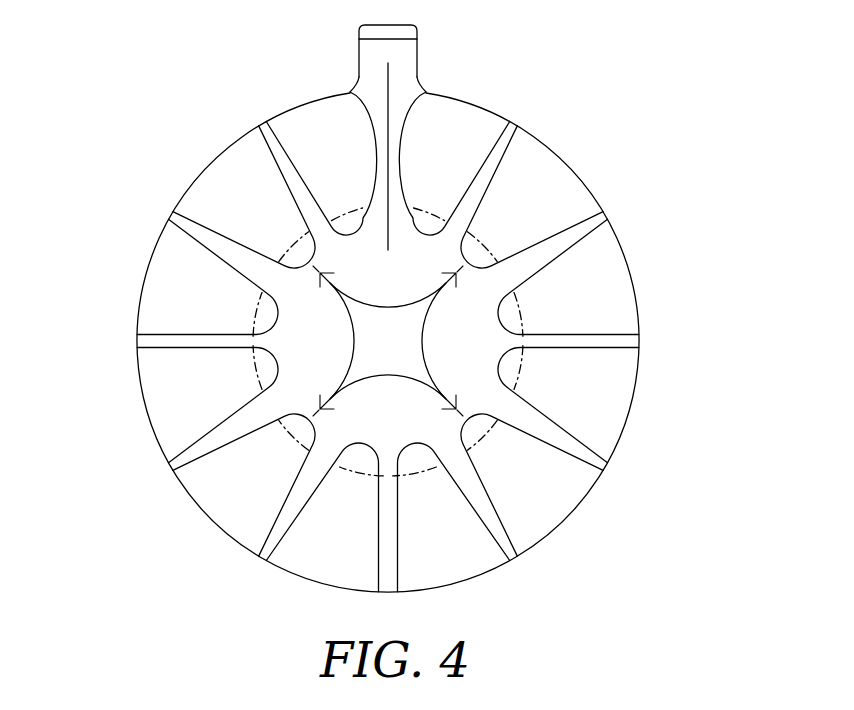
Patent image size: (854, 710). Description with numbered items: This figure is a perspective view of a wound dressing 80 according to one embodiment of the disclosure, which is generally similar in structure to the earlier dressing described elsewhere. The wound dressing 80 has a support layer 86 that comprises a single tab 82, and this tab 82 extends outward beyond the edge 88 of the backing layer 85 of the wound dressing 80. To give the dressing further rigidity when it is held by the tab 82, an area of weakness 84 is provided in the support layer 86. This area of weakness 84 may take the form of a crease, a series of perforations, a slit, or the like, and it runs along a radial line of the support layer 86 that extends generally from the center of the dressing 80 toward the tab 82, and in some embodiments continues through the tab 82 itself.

The wound dressing 80 is at (381, 308).
The tab 82 is at (410, 52).
The area of weakness 84 is at (352, 88).
The backing layer 85 is at (155, 318).
The support layer 86 is at (188, 222).
The edge 88 is at (615, 235).